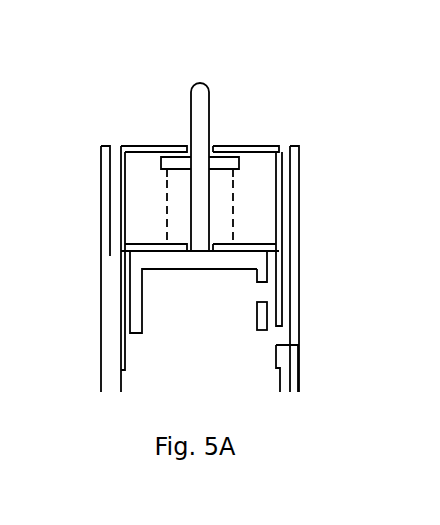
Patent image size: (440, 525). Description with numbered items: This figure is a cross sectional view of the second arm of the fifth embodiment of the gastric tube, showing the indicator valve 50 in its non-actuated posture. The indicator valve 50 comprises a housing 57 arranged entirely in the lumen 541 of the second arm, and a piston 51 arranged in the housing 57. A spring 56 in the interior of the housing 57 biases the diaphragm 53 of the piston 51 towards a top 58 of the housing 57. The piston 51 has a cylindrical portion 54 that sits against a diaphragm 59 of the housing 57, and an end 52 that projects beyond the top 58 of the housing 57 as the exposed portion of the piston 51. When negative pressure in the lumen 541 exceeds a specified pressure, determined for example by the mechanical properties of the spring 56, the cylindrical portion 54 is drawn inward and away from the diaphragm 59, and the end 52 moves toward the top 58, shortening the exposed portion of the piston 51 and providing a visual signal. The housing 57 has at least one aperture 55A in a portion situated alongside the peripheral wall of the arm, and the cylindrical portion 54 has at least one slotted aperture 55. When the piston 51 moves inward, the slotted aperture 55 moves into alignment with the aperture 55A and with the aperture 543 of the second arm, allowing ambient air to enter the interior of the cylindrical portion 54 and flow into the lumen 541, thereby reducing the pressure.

The indicator valve 50 is at (243, 127).
The piston 51 is at (211, 110).
The end of piston 52 is at (191, 87).
The diaphragm of piston 53 is at (215, 162).
The cylindrical portion of piston 54 is at (137, 292).
The lumen 541 is at (183, 330).
The aperture of second arm 543 is at (290, 335).
The slotted aperture 55 is at (258, 295).
The aperture of housing 55A is at (276, 333).
The spring 56 is at (233, 206).
The housing 57 is at (123, 201).
The top of housing 58 is at (131, 148).
The diaphragm of housing 59 is at (154, 242).